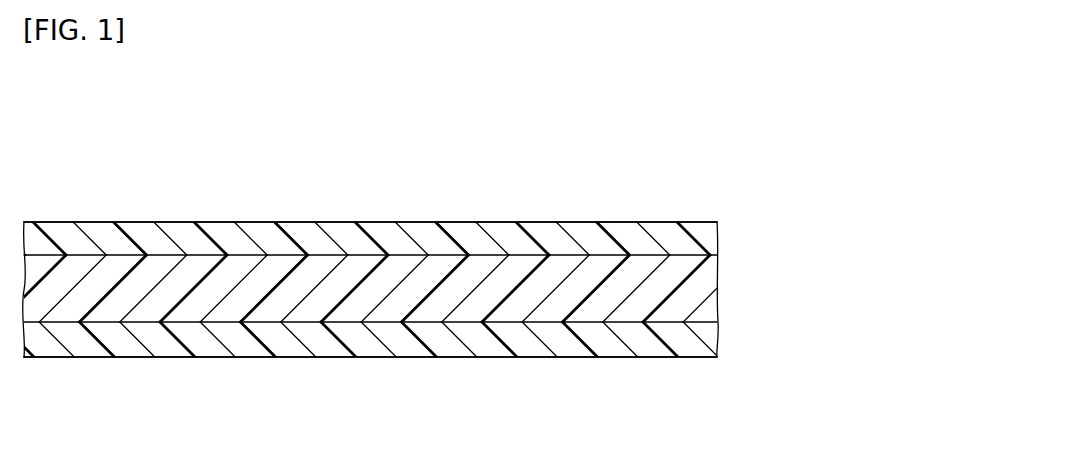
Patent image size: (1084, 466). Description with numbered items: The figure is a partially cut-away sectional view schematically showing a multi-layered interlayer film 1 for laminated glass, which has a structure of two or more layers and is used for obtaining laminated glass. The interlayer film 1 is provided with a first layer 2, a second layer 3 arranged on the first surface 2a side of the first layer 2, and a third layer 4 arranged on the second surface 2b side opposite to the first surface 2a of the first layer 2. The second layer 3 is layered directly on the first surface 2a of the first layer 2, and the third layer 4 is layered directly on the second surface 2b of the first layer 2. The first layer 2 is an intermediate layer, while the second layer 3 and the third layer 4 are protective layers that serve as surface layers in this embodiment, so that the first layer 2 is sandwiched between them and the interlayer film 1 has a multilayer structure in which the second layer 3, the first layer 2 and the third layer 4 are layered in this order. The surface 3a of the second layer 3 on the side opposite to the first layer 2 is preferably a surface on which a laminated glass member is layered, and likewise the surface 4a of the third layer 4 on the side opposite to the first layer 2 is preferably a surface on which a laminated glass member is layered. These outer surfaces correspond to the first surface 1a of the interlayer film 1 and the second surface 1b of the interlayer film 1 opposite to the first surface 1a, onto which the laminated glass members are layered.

The interlayer film 1 is at (155, 152).
The first surface 1a is at (362, 222).
The second surface 1b is at (353, 357).
The first layer 2 is at (722, 295).
The first surface 2a is at (493, 256).
The second surface 2b is at (487, 322).
The second layer 3 is at (722, 243).
The surface 3a is at (625, 222).
The third layer 4 is at (722, 343).
The surface 4a is at (608, 357).